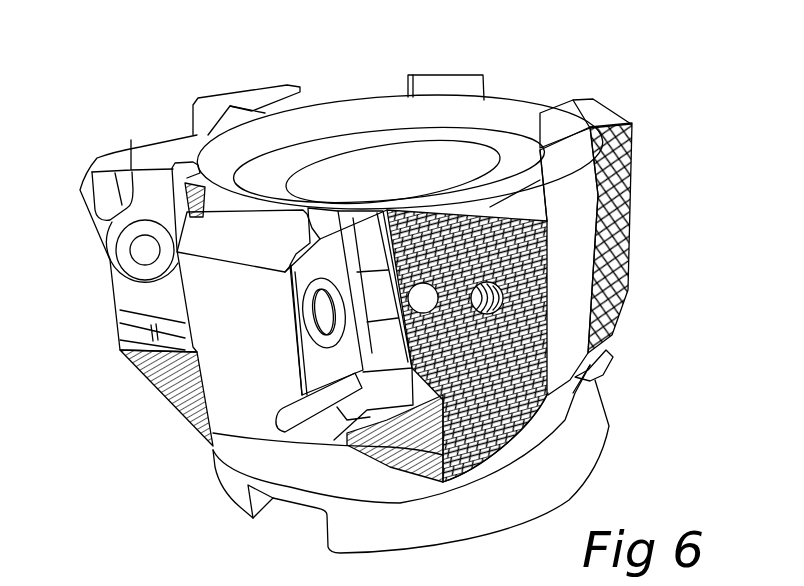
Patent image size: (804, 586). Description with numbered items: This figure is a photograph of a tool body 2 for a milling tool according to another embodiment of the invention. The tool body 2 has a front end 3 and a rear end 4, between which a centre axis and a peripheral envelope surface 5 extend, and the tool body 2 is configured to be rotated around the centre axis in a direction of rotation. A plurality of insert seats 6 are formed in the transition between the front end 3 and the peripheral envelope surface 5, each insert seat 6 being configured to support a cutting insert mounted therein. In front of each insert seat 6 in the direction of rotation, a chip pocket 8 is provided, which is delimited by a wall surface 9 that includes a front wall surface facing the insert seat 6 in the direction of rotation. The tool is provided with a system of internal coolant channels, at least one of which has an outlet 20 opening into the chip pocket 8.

The tool body 2 is at (207, 450).
The front end 3 is at (445, 137).
The rear end 4 is at (474, 540).
The peripheral envelope surface 5 is at (328, 360).
The insert seat 6 is at (327, 365).
The chip pocket 8 is at (507, 383).
The wall surface 9 is at (467, 346).
The outlet 20 is at (423, 293).